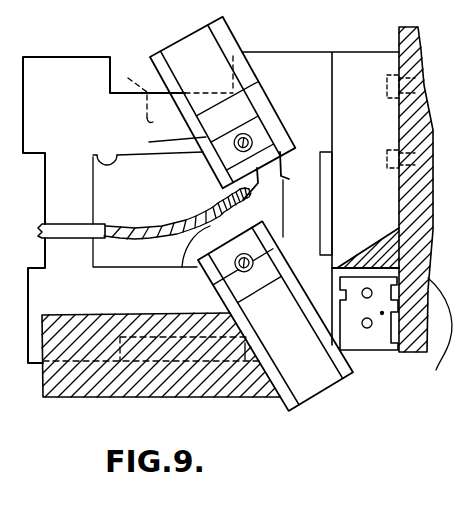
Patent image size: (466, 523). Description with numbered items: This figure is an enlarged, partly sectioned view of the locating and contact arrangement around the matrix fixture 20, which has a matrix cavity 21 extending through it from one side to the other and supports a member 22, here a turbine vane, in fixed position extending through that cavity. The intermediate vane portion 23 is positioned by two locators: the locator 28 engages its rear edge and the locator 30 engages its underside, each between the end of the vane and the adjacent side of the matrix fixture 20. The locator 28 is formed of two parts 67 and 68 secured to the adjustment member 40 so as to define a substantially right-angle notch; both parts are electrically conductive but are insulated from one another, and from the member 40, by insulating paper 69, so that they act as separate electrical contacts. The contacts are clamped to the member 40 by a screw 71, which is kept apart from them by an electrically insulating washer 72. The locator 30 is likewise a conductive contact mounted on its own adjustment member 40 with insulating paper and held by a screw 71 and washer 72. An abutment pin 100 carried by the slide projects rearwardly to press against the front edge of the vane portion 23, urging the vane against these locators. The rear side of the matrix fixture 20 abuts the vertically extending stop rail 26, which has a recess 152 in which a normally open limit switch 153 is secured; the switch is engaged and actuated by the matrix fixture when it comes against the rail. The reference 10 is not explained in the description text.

The housing frame 10 is at (300, 125).
The matrix fixture 20 is at (73, 56).
The matrix cavity 21 is at (117, 154).
The member (turbine vane) 22 is at (137, 221).
The intermediate vane portion 23 is at (125, 240).
The rails (stop rails) 26 is at (368, 55).
The locator 28 is at (286, 193).
The locator 30 is at (196, 263).
The adjustment member (support) 40 is at (243, 38).
The part (contact) 67 is at (279, 174).
The part (contact) 68 is at (245, 192).
The insulating paper 69 is at (297, 185).
The screw 71 is at (237, 131).
The electrically insulating washer 72 is at (276, 130).
The abutment pin 100 is at (72, 238).
The recess 152 is at (425, 207).
The limit switch 153 is at (386, 342).